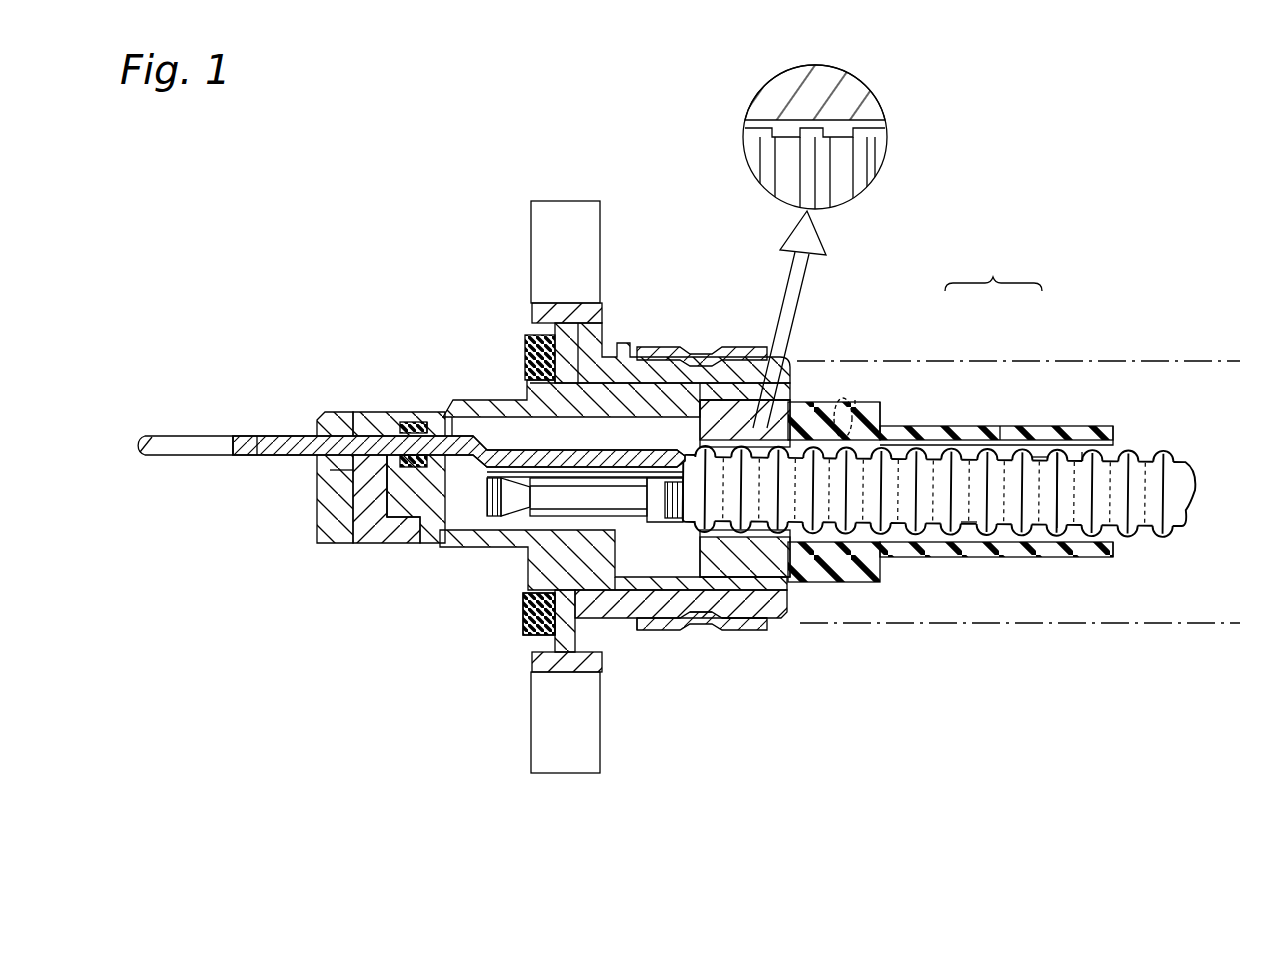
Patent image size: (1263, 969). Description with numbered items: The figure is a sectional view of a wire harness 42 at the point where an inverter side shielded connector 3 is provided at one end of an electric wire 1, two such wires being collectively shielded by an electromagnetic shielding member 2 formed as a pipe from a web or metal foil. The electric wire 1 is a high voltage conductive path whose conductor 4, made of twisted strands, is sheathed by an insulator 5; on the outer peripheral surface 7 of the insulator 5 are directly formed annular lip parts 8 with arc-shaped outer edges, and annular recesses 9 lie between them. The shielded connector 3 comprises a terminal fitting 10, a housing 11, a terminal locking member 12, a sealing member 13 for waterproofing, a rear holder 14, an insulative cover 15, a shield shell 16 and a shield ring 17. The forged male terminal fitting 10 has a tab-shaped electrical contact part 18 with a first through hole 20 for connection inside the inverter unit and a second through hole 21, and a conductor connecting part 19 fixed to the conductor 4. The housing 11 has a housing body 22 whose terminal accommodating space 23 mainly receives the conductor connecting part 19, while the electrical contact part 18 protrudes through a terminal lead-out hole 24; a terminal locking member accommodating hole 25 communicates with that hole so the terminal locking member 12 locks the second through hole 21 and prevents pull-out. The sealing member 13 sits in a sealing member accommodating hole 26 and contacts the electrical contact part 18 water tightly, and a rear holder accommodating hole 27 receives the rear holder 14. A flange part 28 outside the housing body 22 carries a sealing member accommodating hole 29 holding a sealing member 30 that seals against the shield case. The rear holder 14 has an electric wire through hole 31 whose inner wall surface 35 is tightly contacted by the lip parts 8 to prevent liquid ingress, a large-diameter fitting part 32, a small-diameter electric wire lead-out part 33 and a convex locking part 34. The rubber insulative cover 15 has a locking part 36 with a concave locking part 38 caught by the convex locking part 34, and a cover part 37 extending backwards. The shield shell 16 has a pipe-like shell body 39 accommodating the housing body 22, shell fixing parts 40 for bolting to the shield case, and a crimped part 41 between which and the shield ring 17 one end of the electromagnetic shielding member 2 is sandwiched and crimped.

The electric wire 1 is at (1145, 500).
The electromagnetic shielding member 2 is at (1230, 361).
The shielded connector 3 is at (633, 250).
The conductor 4 is at (485, 497).
The insulator 5 is at (880, 150).
The outer peripheral surface 7 is at (745, 122).
The lip part 8 is at (805, 120).
The annular recess 9 is at (775, 118).
The terminal fitting 10 is at (527, 453).
The housing 11 is at (330, 517).
The terminal locking member 12 is at (370, 540).
The sealing member 13 is at (421, 427).
The rear holder 14 is at (835, 82).
The insulative cover 15 is at (993, 265).
The shield shell 16 is at (592, 323).
The shield ring 17 is at (740, 353).
The electrical contact part 18 is at (257, 433).
The conductor connecting part 19 is at (681, 620).
The first through hole 20 is at (172, 438).
The second through hole 21 is at (383, 433).
The housing body 22 is at (590, 562).
The terminal accommodating space 23 is at (622, 435).
The terminal lead-out hole 24 is at (300, 433).
The terminal locking member accommodating hole 25 is at (333, 492).
The sealing member accommodating hole 26 is at (402, 426).
The rear holder accommodating hole 27 is at (753, 592).
The flange part 28 is at (563, 638).
The sealing member accommodating hole 29 is at (523, 617).
The sealing member 30 is at (520, 633).
The electric wire through hole 31 is at (887, 560).
The fitting part 32 is at (718, 400).
The electric wire lead-out part 33 is at (820, 398).
The convex locking part 34 is at (840, 398).
The inner wall surface 35 is at (850, 118).
The locking part 36 is at (893, 410).
The cover part 37 is at (1020, 430).
The concave locking part 38 is at (855, 400).
The shell body 39 is at (653, 620).
The shell fixing part 40 is at (535, 250).
The crimped part 41 is at (710, 615).
The wire harness 42 is at (878, 268).